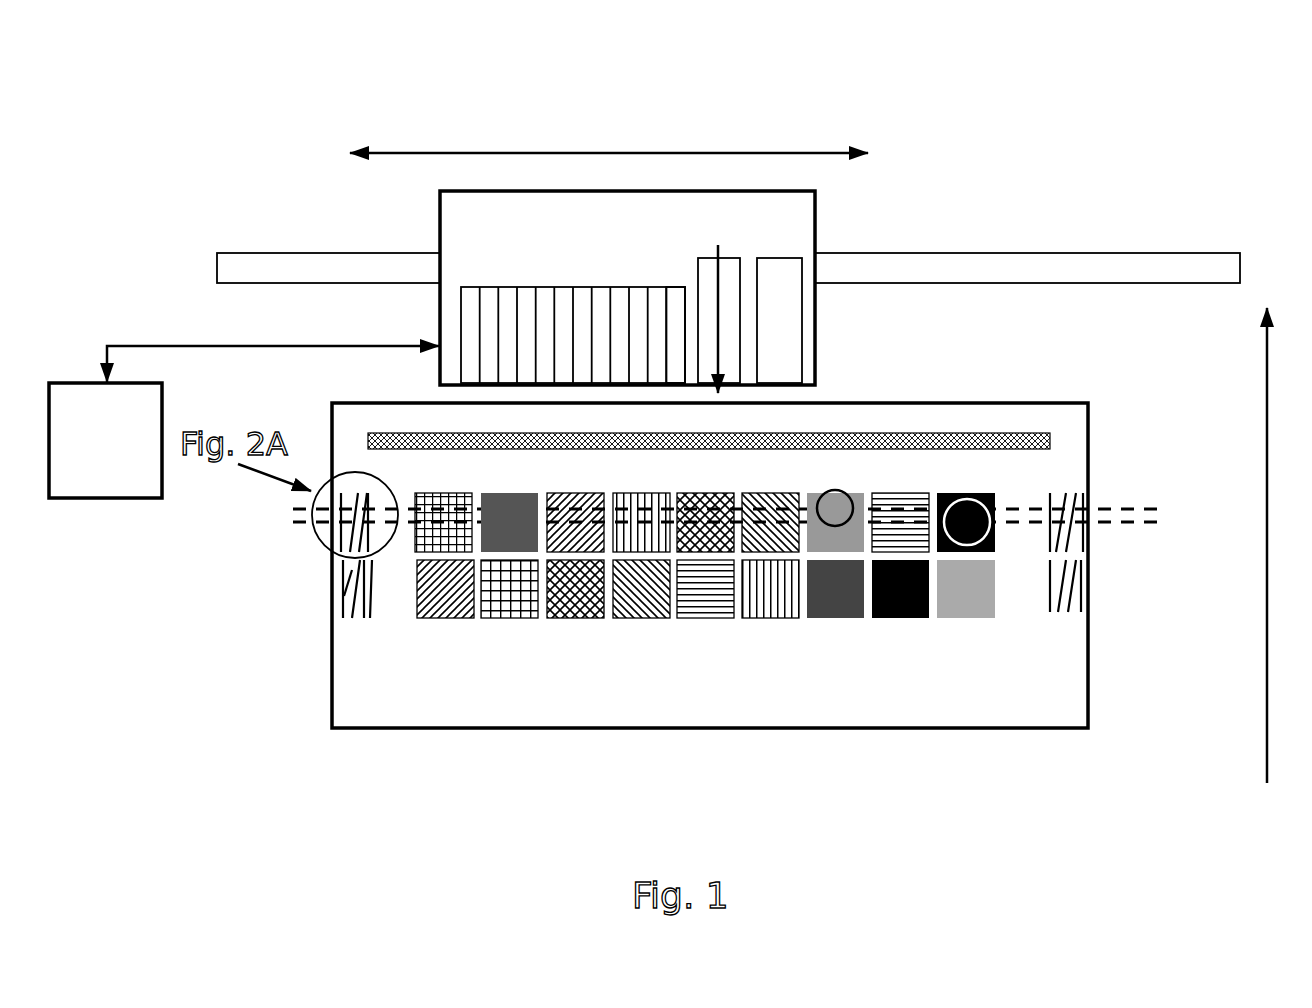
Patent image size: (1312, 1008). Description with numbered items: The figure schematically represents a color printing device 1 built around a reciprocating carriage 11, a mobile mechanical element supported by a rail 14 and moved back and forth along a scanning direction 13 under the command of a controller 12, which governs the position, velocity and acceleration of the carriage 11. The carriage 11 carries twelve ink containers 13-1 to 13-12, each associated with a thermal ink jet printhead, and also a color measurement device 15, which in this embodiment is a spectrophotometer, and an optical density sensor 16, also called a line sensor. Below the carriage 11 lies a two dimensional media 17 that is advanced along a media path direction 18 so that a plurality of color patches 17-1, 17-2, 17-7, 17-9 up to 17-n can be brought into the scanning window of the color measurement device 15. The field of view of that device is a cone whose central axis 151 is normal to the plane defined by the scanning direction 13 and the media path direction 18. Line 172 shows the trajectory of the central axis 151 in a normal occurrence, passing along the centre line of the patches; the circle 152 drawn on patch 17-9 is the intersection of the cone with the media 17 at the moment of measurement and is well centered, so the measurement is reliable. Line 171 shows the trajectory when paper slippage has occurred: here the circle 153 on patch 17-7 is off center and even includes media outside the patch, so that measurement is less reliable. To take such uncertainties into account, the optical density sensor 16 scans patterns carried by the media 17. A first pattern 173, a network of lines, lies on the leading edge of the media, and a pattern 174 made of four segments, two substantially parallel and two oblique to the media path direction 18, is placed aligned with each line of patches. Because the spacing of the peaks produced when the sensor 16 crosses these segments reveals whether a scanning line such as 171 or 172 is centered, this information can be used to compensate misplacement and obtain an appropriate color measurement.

The color printing device 1 is at (198, 152).
The carriage 11 is at (820, 198).
The controller 12 is at (93, 503).
The scanning direction 13 is at (565, 153).
The ink container 13-1 is at (455, 315).
The ink container 13-12 is at (683, 302).
The rail 14 is at (1050, 250).
The color measurement device 15 is at (722, 303).
The central axis 151 is at (717, 301).
The field of view 152 is at (985, 516).
The field of view 153 is at (815, 522).
The optical density sensor 16 is at (781, 287).
The two dimensional media 17 is at (540, 730).
The patch 17-1 is at (447, 537).
The patch 17-2 is at (502, 548).
The patch 17-7 is at (848, 553).
The patch 17-9 is at (939, 553).
The patch 17-n is at (1000, 594).
The trajectory 171 is at (1163, 506).
The trajectory 172 is at (1118, 524).
The first pattern 173 is at (364, 430).
The pattern 174 is at (343, 588).
The media path direction 18 is at (1260, 362).